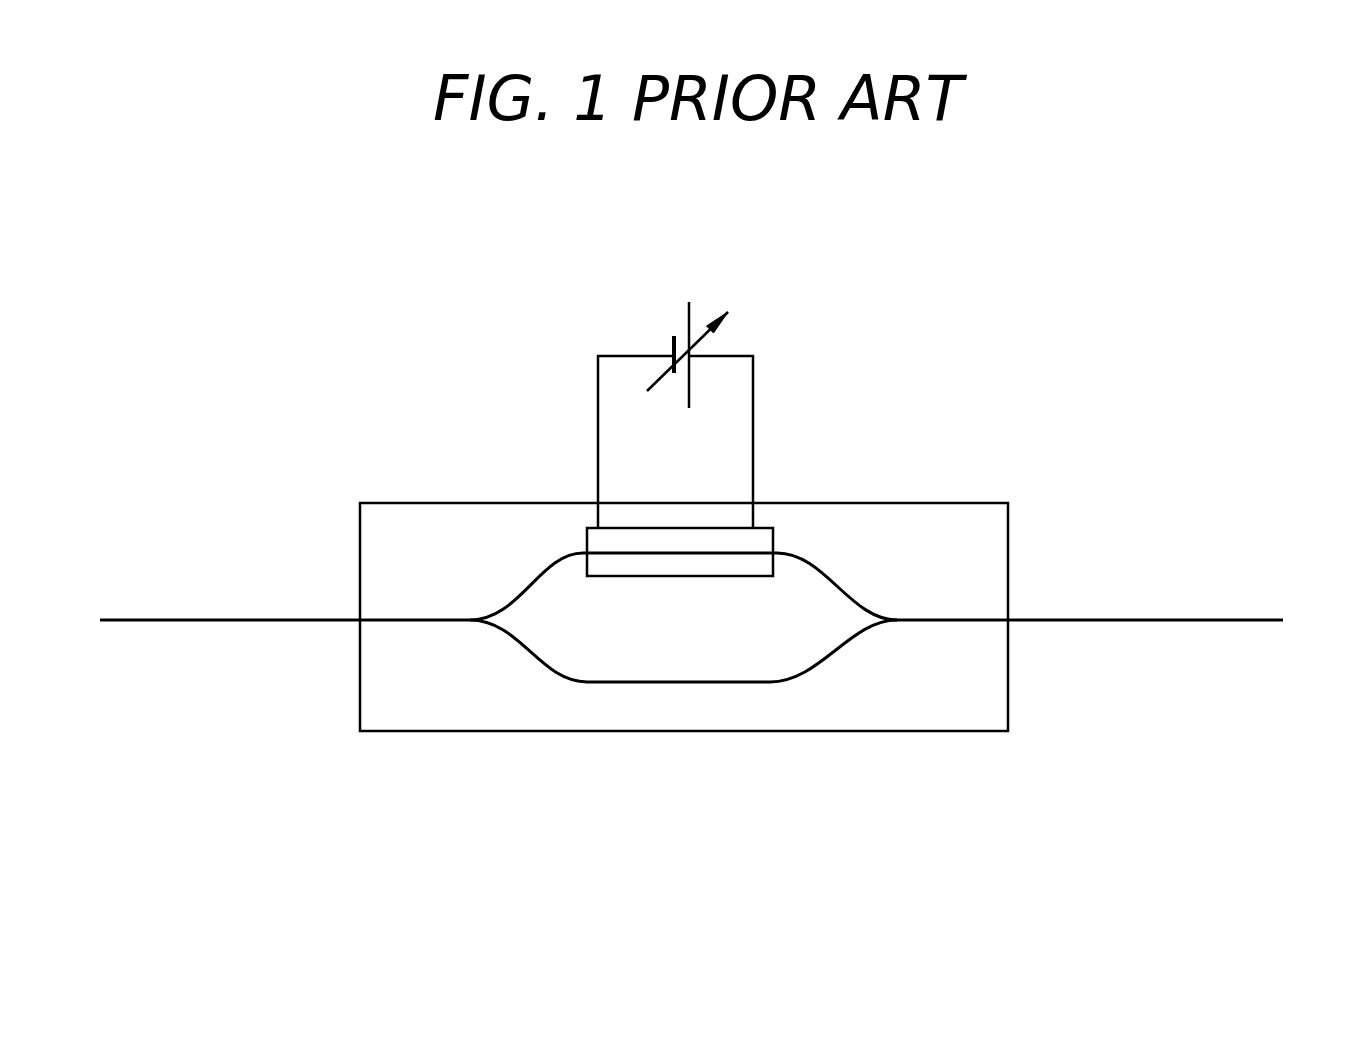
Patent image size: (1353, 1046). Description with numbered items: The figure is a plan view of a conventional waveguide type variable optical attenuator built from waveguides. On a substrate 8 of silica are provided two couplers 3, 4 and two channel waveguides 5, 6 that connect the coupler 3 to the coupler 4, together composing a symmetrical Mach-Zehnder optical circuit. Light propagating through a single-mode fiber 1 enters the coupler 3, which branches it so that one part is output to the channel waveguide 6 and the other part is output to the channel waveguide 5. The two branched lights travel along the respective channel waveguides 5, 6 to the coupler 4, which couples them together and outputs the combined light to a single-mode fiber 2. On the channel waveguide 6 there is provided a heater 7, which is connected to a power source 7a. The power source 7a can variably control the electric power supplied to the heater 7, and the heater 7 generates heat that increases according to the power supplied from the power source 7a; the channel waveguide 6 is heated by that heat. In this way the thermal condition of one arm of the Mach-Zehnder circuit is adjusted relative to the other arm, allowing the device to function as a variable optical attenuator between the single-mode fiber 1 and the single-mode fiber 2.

The single-mode fiber 1 is at (227, 622).
The single-mode fiber 2 is at (1195, 620).
The coupler 3 is at (467, 620).
The coupler 4 is at (897, 620).
The channel waveguide 5 is at (665, 685).
The channel waveguide 6 is at (820, 558).
The heater 7 is at (586, 536).
The power source 7a is at (692, 313).
The substrate 8 is at (403, 548).